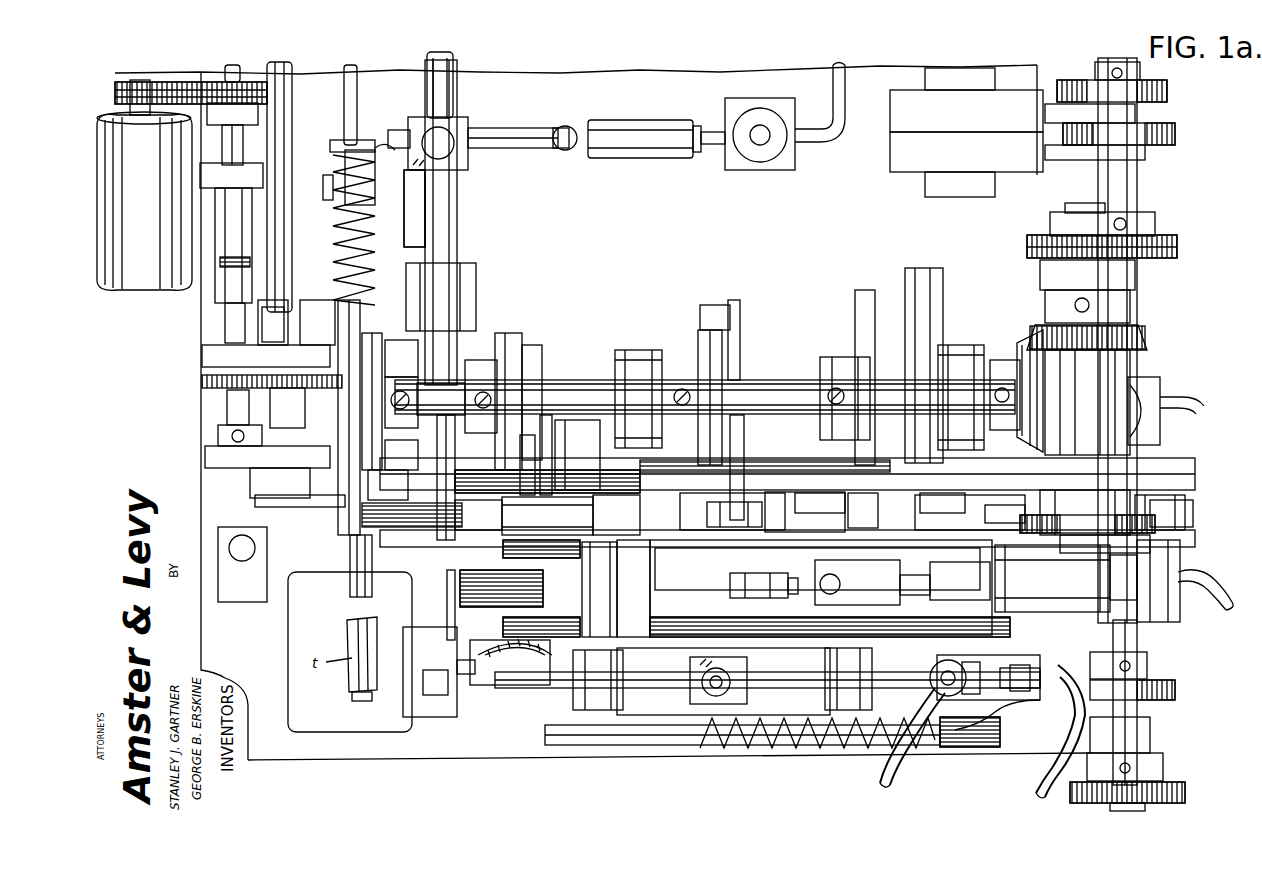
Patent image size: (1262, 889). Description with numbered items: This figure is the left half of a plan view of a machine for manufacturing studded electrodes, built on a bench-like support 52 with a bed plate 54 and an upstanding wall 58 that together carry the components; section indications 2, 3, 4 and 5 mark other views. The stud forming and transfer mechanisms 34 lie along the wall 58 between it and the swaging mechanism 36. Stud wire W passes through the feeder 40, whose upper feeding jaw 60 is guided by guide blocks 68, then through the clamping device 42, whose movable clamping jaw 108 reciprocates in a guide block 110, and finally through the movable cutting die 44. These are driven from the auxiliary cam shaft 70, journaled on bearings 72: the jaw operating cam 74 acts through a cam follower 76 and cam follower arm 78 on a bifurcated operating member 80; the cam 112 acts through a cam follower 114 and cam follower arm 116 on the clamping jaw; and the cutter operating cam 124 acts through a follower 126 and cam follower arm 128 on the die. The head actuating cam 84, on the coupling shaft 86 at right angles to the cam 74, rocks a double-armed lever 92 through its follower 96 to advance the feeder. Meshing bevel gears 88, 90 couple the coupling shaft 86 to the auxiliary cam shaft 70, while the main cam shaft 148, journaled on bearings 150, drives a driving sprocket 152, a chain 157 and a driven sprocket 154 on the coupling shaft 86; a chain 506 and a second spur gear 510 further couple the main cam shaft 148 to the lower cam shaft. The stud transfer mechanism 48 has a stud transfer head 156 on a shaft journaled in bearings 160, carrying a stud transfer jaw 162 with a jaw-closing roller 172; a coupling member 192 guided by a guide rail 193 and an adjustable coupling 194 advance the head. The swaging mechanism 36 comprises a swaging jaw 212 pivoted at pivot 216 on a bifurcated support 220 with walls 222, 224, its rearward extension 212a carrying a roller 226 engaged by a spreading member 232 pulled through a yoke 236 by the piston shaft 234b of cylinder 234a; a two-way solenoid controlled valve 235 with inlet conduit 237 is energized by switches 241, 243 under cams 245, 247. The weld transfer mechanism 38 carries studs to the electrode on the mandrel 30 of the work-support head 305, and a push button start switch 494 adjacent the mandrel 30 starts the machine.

The mandrel 30 is at (350, 584).
The stud transfer mechanism 48 is at (460, 248).
The adjustable coupling 194 is at (447, 74).
The coupling member 192 is at (468, 165).
The bearings 150 is at (455, 203).
The guide rail 193 is at (412, 215).
The bearings 160 is at (476, 275).
The bench-like support 52 is at (635, 80).
The bed plate 54 is at (688, 70).
The switch 243 is at (897, 108).
The switch 241 is at (900, 155).
The cam 247 is at (1168, 92).
The cam 245 is at (1178, 135).
The driven sprocket 154 is at (1062, 220).
The driving sprocket 152 is at (1162, 232).
The chain 157 is at (1172, 247).
The bevel gear 88 is at (1143, 343).
The bevel gear 90 is at (1020, 348).
The coupling shaft 86 is at (1100, 430).
The auxiliary cam shaft 70 is at (778, 382).
The cutter operating cam 124 is at (510, 333).
The bearings 72 is at (636, 355).
The cam 112 is at (698, 345).
The cam follower 114 is at (722, 305).
The cam follower arm 116 is at (738, 352).
The jaw operating cam 74 is at (846, 360).
The cam follower 76 is at (862, 310).
The cam follower arm 78 is at (880, 300).
The stud transfer head 156 is at (432, 415).
The jaw-closing roller 172 is at (462, 422).
The stud transfer jaw 162 is at (455, 455).
The follower 126 is at (538, 440).
The cam follower arm 128 is at (548, 480).
The movable cutting die 44 is at (573, 498).
The upstanding wall 58 is at (780, 470).
The guide block 110 is at (700, 497).
The movable clamping jaw 108 is at (757, 508).
The clamping device 42 is at (778, 502).
The guide blocks 68 is at (816, 495).
The bifurcated operating member 80 is at (855, 495).
The feeder 40 is at (945, 502).
The upper feeding jaw 60 is at (988, 498).
The head actuating cam 84 is at (1088, 515).
The double-armed lever 92 is at (1160, 500).
The stud forming and transfer mechanisms 34 is at (1205, 502).
The stud wire W is at (1238, 508).
The follower 96 is at (1186, 528).
The swaging mechanism 36 is at (1188, 576).
The two-way solenoid controlled valve 235 is at (1178, 604).
The inlet conduit 237 is at (1228, 608).
The work-support head 305 is at (180, 495).
The push button start switch 494 is at (242, 552).
The pivot 216 is at (543, 572).
The swaging jaw 212 is at (578, 590).
The rearward extension 212a is at (668, 585).
The bifurcated support 220 is at (957, 624).
The yoke 236 is at (875, 565).
The roller 226 is at (730, 588).
The spreading member 232 is at (828, 603).
The wall 224 is at (905, 628).
The piston shaft 234b is at (920, 578).
The cylinder 234a is at (1066, 578).
The wall 222 is at (822, 542).
The weld transfer mechanism 38 is at (473, 728).
The main cam shaft 148 is at (1140, 642).
The chain 506 is at (1170, 780).
The second spur gear 510 is at (1186, 790).
The section line 3 is at (437, 27).
The section line 2 is at (138, 542).
The section line 4 is at (212, 590).
The section line 5 is at (1261, 325).